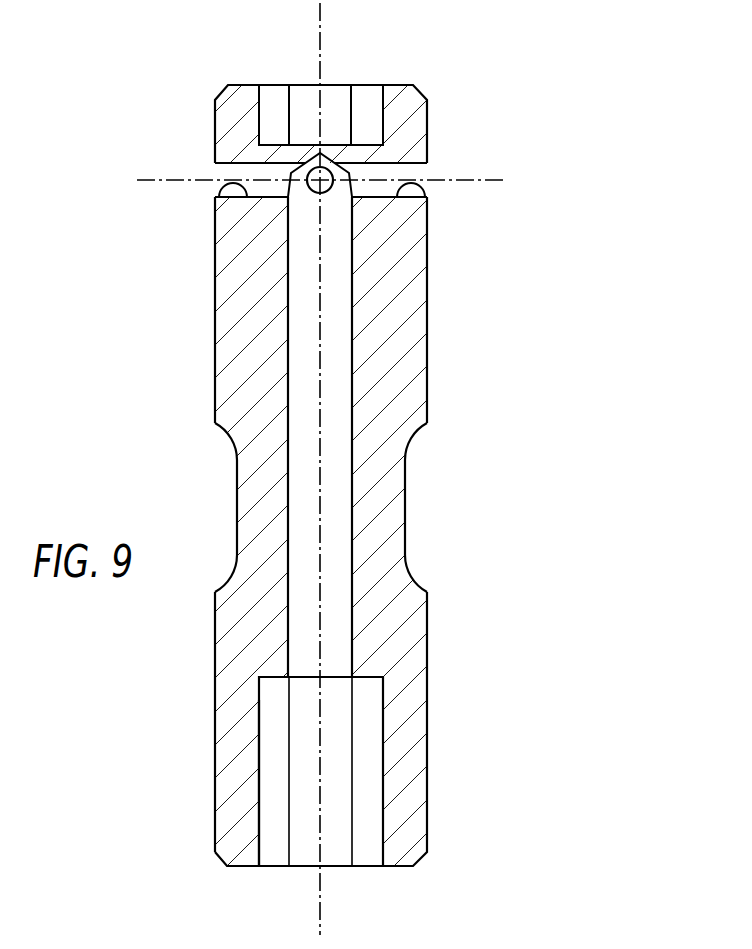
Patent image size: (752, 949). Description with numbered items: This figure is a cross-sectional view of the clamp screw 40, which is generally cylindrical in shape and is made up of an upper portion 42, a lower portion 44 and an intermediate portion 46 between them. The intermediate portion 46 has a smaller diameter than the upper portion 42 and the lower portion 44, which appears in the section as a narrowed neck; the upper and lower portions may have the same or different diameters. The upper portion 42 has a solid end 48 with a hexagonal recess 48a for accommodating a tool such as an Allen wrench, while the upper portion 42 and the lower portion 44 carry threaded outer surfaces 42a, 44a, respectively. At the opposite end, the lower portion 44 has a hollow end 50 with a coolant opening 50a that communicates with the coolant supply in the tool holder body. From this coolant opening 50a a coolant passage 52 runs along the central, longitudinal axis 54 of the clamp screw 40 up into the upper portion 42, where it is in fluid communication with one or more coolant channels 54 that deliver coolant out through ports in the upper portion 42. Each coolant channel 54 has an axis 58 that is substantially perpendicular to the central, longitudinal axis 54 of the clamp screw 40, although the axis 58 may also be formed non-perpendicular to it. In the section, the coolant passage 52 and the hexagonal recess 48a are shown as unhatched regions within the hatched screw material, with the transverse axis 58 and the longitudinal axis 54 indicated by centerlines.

The clamp screw 40 is at (565, 254).
The upper portion 42 is at (430, 341).
The threaded outer surface 42a is at (213, 360).
The lower portion 44 is at (430, 678).
The threaded outer surface 44a is at (215, 715).
The intermediate portion 46 is at (414, 497).
The solid end 48 is at (243, 80).
The hexagonal recess 48a is at (382, 99).
The hollow end 50 is at (378, 885).
The coolant opening 50a is at (260, 827).
The coolant passage 52 is at (289, 316).
The central, longitudinal axis 54 is at (319, 35).
The axis 58 is at (158, 180).